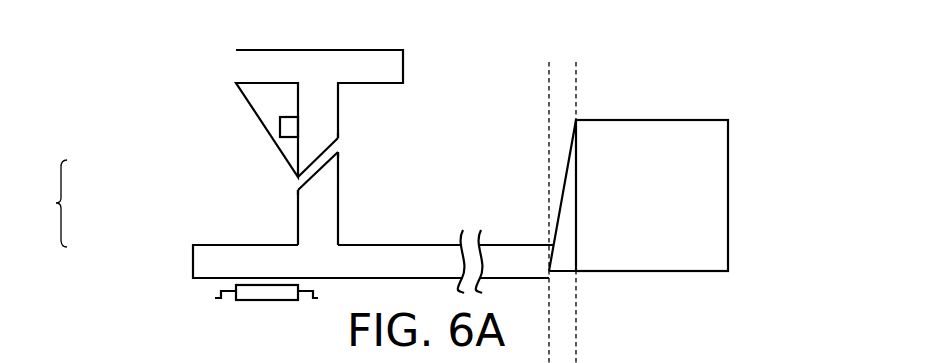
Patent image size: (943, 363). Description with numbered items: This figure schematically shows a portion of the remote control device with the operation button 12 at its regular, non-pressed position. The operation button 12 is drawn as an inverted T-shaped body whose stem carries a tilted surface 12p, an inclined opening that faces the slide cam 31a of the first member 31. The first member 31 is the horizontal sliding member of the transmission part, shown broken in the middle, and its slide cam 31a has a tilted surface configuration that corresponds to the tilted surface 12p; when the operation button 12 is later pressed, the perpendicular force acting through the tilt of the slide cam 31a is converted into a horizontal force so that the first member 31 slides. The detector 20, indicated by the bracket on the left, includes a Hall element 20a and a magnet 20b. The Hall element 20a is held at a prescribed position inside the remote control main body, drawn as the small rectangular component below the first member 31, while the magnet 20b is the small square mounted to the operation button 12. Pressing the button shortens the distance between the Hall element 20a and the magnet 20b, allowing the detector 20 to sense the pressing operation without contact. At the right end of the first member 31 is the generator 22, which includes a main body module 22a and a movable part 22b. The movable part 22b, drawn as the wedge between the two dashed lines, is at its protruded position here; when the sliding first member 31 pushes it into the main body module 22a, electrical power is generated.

The operation button 12 is at (304, 124).
The tilted surface 12p is at (298, 188).
The detector 20 is at (170, 208).
The Hall element 20a is at (262, 289).
The magnet 20b is at (290, 128).
The generator 22 is at (690, 234).
The main body module 22a is at (683, 226).
The movable part 22b is at (562, 258).
The first member 31 is at (373, 196).
The slide cam 31a is at (338, 140).